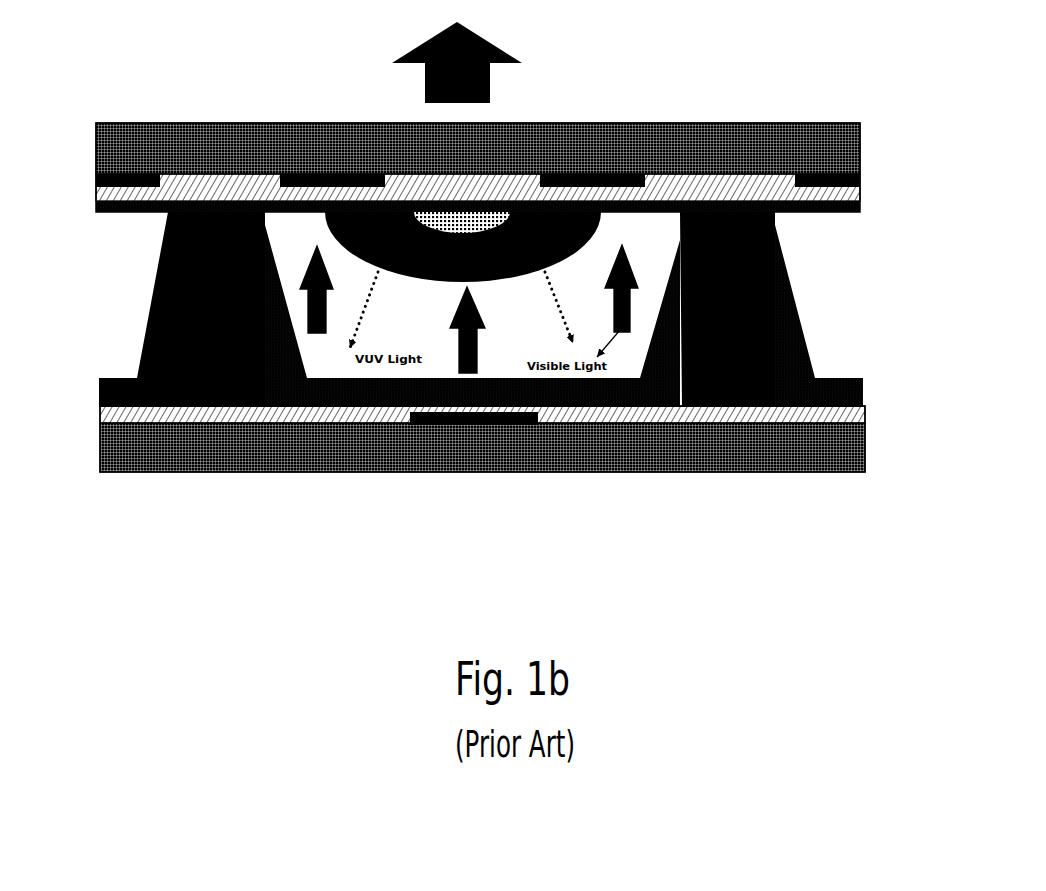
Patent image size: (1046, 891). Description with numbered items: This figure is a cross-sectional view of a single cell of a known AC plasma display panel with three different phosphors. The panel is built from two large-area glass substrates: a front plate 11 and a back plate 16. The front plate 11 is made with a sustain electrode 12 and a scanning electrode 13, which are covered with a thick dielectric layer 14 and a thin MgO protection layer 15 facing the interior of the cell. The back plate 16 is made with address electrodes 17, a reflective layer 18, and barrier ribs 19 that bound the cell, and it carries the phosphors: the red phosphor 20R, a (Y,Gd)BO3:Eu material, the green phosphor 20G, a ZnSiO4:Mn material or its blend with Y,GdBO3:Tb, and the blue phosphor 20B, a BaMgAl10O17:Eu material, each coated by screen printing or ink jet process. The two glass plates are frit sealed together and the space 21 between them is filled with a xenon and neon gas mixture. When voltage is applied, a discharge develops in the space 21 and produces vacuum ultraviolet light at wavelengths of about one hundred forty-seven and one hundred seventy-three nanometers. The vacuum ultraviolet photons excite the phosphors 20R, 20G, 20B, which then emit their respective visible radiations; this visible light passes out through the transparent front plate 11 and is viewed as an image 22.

The front plate 11 is at (848, 140).
The sustain electrode 12 is at (332, 175).
The scanning electrode 13 is at (607, 175).
The dielectric layer 14 is at (98, 192).
The protection layer 15 is at (860, 210).
The back plate 16 is at (710, 453).
The address electrode 17 is at (483, 425).
The reflective layer 18 is at (117, 422).
The barrier rib 19 is at (777, 337).
The red phosphor 20R is at (147, 405).
The green phosphor 20G is at (346, 405).
The blue phosphor 20B is at (803, 405).
The space 21 is at (497, 357).
The image 22 is at (462, 62).